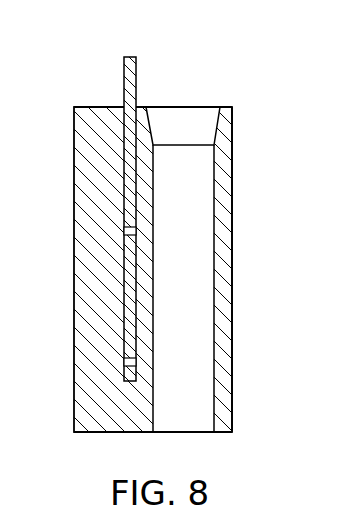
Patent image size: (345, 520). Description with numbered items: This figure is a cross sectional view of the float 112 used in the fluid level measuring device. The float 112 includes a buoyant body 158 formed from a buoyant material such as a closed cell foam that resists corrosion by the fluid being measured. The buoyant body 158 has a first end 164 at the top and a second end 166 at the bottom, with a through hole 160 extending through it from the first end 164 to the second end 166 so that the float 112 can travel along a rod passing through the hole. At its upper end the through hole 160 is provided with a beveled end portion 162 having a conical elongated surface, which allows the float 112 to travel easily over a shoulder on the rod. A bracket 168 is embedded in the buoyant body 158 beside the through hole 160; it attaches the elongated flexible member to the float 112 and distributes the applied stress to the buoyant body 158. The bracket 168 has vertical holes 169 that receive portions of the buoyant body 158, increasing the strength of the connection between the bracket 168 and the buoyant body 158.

The float 112 is at (262, 189).
The buoyant body 158 is at (86, 319).
The through hole 160 is at (218, 311).
The beveled end portion 162 is at (228, 116).
The first end 164 is at (80, 107).
The second end 166 is at (88, 433).
The bracket 168 is at (127, 57).
The vertical holes 169 is at (124, 230).